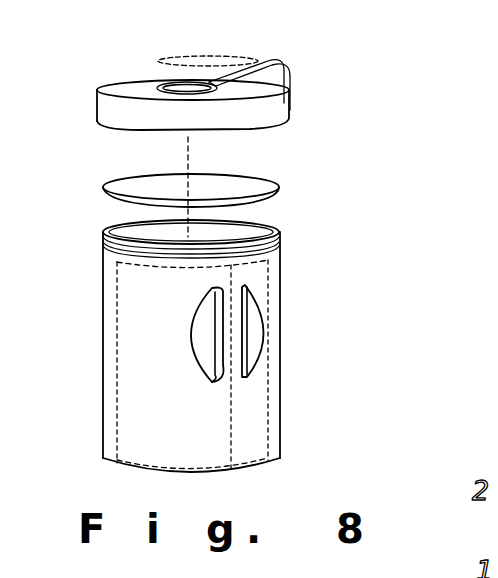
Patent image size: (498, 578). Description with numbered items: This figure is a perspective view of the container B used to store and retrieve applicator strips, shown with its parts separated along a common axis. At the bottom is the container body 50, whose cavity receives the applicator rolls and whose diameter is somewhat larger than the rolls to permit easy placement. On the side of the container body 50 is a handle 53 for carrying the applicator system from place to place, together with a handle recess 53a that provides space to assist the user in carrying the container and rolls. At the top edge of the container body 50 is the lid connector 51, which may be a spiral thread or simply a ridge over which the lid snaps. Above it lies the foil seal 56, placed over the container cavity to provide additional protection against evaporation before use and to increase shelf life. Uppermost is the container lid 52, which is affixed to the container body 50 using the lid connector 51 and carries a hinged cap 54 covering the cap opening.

The container body 50 is at (280, 415).
The lid connector 51 is at (160, 230).
The container lid 52 is at (260, 122).
The handle 53 is at (242, 342).
The handle recess 53a is at (203, 318).
The hinged cap 54 is at (203, 82).
The foil seal 56 is at (280, 190).
The container B is at (298, 366).